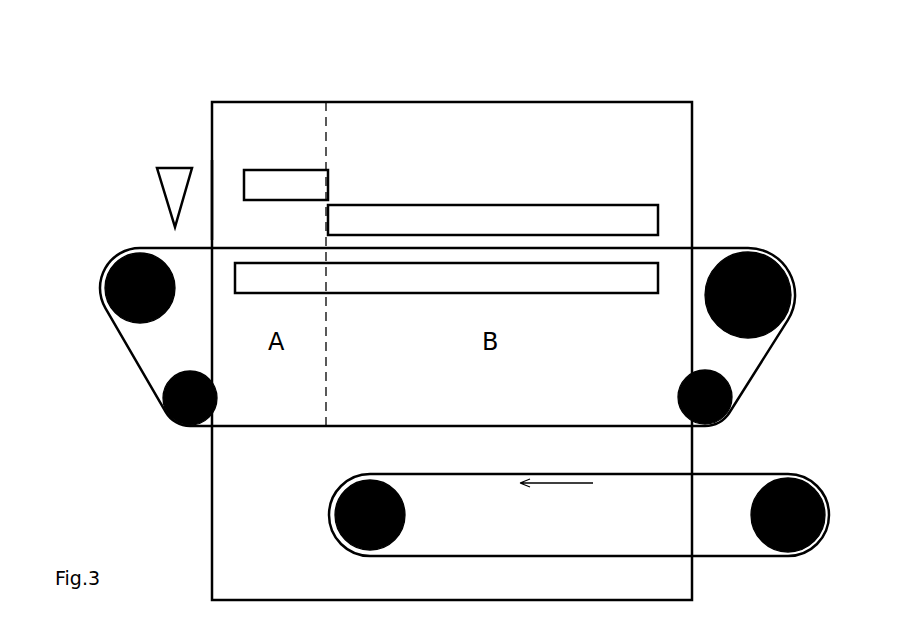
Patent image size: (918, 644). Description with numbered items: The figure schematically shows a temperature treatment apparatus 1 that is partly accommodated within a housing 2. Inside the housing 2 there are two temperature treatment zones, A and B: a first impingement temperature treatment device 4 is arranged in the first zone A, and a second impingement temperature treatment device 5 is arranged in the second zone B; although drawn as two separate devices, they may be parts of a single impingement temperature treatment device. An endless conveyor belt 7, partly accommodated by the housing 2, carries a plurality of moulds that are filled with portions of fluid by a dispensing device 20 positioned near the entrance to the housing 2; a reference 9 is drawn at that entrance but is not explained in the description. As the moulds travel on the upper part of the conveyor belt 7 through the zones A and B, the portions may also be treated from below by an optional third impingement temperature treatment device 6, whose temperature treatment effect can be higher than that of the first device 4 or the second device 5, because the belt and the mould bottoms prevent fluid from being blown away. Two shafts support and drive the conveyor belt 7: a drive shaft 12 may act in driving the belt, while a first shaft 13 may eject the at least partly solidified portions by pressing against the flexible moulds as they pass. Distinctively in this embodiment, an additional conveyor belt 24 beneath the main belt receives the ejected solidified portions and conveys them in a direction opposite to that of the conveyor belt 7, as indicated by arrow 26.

The temperature treatment apparatus 1 is at (726, 126).
The housing 2 is at (587, 101).
The first impingement temperature treatment device 4 is at (275, 170).
The second impingement temperature treatment device 5 is at (490, 205).
The third impingement temperature treatment device 6 is at (415, 295).
The conveyor belt 7 is at (757, 370).
The entrance 9 is at (205, 225).
The drive shaft 12 is at (100, 300).
The first shaft 13 is at (790, 278).
The dispensing device 20 is at (160, 193).
The additional conveyor belt 24 is at (822, 472).
The arrow 26 is at (560, 490).